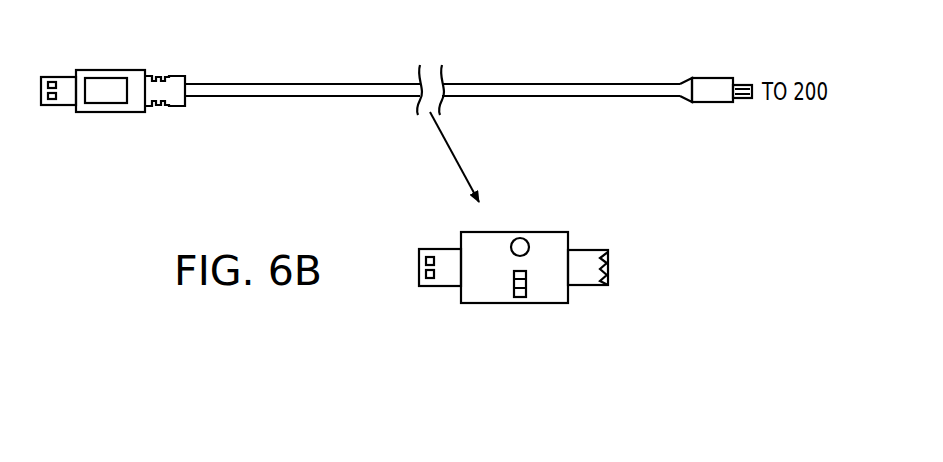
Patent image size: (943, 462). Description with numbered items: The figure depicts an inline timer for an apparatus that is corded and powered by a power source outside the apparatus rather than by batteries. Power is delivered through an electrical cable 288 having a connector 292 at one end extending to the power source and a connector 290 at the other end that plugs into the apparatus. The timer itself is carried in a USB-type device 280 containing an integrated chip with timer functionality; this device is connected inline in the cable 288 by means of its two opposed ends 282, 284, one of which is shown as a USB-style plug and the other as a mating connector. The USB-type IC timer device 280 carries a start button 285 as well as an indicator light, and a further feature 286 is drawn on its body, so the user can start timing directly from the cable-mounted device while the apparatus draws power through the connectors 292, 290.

The USB-type device 280 is at (588, 220).
The opposed end 282 is at (588, 287).
The opposed end 284 is at (439, 287).
The start button 285 is at (520, 238).
The switch 286 is at (520, 298).
The electrical cable 288 is at (302, 83).
The connector 290 is at (710, 78).
The connector 292 is at (110, 69).